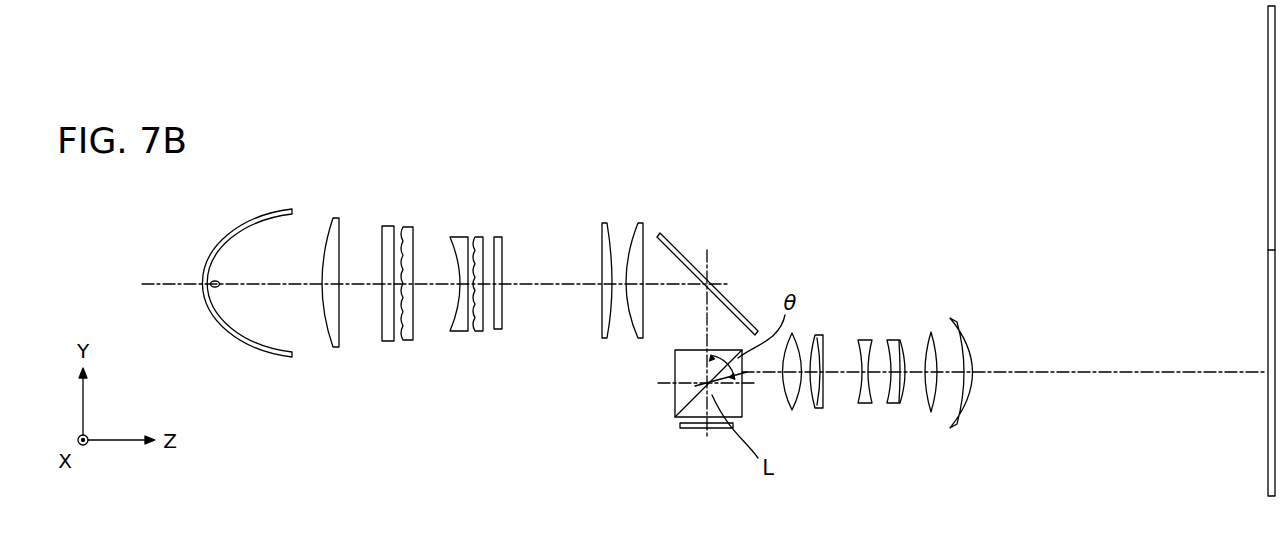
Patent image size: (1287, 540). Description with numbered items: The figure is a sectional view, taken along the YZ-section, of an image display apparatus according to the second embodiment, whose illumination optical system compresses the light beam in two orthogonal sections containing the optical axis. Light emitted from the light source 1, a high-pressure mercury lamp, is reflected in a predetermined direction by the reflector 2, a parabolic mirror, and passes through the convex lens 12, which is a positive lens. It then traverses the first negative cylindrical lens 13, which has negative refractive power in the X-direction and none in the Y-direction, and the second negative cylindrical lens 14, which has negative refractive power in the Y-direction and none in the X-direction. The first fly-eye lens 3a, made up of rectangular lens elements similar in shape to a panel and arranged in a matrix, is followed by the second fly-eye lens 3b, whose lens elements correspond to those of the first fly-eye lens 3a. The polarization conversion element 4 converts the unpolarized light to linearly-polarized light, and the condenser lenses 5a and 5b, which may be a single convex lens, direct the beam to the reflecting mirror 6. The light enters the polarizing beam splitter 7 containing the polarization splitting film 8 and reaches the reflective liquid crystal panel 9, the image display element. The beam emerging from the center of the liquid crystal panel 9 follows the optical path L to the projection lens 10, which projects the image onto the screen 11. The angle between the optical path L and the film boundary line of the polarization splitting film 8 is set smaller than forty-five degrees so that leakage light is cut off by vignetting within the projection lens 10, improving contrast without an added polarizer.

The light source 1 is at (219, 282).
The reflector 2 is at (210, 337).
The first fly-eye lens 3a is at (403, 343).
The second fly-eye lens 3b is at (475, 333).
The polarization conversion element 4 is at (497, 332).
The condenser lens 5a is at (602, 223).
The condenser lens 5b is at (641, 223).
The reflecting mirror 6 is at (680, 243).
The polarizing beam splitter 7 is at (675, 382).
The polarization splitting film 8 is at (722, 362).
The reflective liquid crystal panel 9 is at (680, 425).
The projection lens 10 is at (775, 428).
The screen 11 is at (1268, 185).
The convex lens 12 is at (337, 218).
The first negative cylindrical lens 13 is at (392, 224).
The second negative cylindrical lens 14 is at (460, 236).